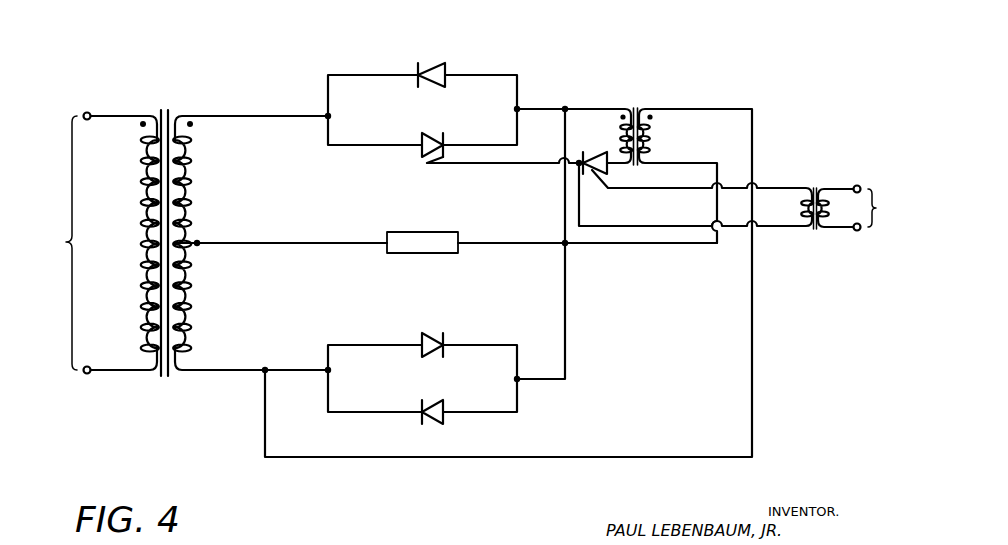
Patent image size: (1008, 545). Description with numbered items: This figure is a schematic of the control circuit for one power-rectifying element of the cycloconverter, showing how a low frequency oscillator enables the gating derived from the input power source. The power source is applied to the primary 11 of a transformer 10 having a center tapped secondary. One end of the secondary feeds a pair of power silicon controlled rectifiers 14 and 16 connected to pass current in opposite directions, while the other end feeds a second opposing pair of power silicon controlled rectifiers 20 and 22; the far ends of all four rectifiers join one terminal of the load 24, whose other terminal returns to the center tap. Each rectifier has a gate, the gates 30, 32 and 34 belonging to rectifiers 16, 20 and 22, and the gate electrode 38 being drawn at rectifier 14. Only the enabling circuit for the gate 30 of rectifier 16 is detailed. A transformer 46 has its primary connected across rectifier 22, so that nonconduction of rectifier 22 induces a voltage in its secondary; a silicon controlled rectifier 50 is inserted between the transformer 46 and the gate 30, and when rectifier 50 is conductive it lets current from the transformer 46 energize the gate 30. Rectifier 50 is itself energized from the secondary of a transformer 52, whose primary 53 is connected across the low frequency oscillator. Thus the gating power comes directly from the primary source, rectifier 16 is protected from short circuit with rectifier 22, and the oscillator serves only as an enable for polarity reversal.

The transformer 10 is at (167, 110).
The primary 11 is at (65, 243).
The power silicon controlled rectifier 14 is at (418, 88).
The power silicon controlled rectifier 16 is at (430, 140).
The power silicon controlled rectifier 20 is at (443, 357).
The power silicon controlled rectifier 22 is at (438, 400).
The load 24 is at (440, 232).
The gate 30 is at (427, 165).
The gate 32 is at (428, 334).
The gate 34 is at (437, 425).
The gate electrode 38 is at (433, 62).
The transformer 46 is at (636, 110).
The silicon controlled rectifier 50 is at (604, 150).
The transformer 52 is at (815, 188).
The primary 53 is at (879, 208).